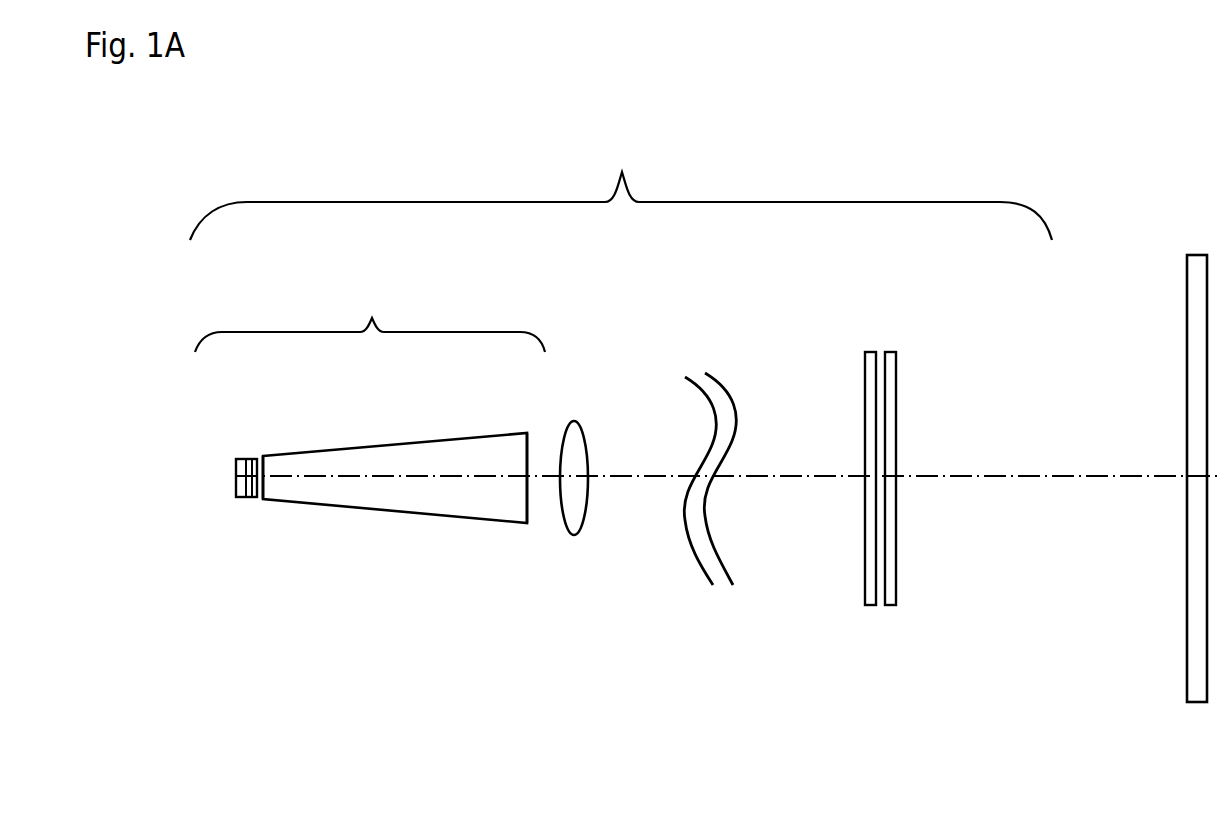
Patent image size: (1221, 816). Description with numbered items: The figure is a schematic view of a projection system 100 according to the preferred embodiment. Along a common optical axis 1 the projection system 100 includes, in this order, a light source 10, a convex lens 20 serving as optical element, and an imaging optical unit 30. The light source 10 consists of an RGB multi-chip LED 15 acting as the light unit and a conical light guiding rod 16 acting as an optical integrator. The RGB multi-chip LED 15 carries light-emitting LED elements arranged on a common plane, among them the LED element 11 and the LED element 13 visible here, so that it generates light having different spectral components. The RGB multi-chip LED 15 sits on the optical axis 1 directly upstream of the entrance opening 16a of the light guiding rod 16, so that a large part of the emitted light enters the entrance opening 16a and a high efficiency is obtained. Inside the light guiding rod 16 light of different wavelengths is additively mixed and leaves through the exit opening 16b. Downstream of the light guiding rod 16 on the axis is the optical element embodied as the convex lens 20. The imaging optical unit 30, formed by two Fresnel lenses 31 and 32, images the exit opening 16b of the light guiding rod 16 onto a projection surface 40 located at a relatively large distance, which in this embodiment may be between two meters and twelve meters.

The optical axis 1 is at (1020, 474).
The projection system 100 is at (621, 192).
The light source 10 is at (372, 316).
The RGB multi-chip LED 15 is at (228, 461).
The LED element 11 is at (259, 460).
The LED element 13 is at (258, 497).
The conical light guiding rod 16 is at (372, 446).
The entrance opening 16a is at (263, 466).
The exit opening 16b is at (528, 510).
The convex lens 20 is at (585, 518).
The imaging optical unit 30 is at (880, 458).
The Fresnel lens 31 is at (865, 590).
The Fresnel lens 32 is at (896, 588).
The projection surface 40 is at (1187, 632).